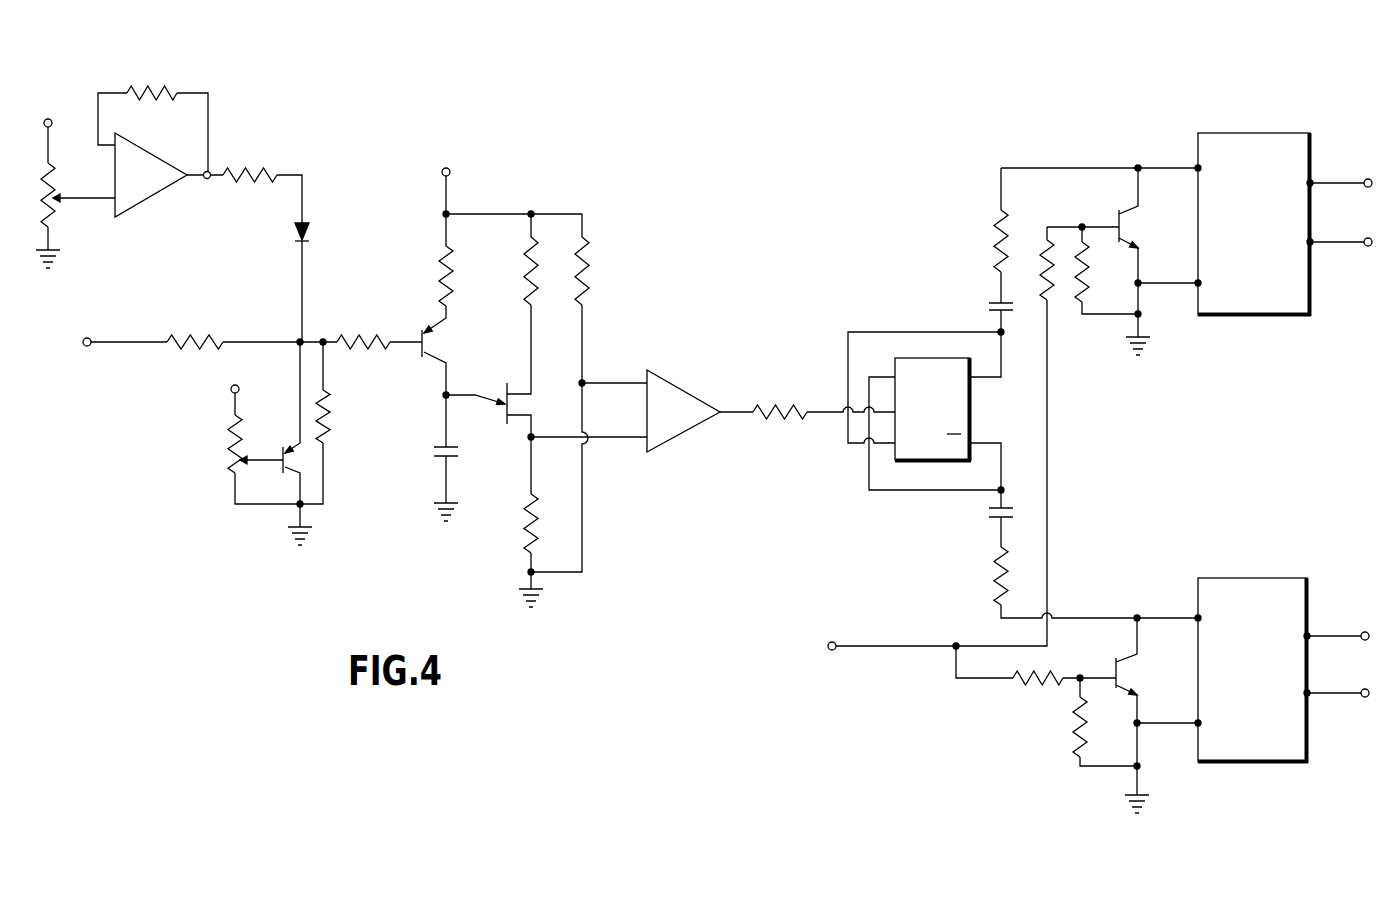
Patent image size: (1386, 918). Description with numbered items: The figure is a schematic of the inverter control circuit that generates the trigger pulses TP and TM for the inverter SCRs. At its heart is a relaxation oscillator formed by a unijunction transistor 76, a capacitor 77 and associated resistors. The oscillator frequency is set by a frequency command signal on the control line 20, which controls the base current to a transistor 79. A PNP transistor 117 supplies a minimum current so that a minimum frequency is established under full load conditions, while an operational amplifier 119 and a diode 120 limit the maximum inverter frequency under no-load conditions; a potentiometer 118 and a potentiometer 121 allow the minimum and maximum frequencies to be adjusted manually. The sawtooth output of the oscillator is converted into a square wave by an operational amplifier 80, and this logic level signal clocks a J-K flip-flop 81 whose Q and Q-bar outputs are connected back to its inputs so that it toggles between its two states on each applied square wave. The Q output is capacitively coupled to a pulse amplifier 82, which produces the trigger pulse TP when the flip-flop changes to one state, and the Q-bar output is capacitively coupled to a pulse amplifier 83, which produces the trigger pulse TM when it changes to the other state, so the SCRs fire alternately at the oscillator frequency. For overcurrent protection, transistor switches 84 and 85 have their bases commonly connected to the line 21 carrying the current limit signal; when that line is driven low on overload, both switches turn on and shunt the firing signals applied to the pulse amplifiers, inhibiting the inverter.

The control line 20 is at (85, 346).
The line 21 is at (836, 642).
The unijunction transistor 76 is at (523, 387).
The capacitor 77 is at (458, 450).
The transistor 79 is at (432, 362).
The operational amplifier 80 is at (688, 392).
The J-K flip-flop 81 is at (941, 358).
The pulse amplifier 82 is at (1281, 133).
The pulse amplifier 83 is at (1220, 578).
The transistor switch 84 is at (1127, 229).
The transistor switch 85 is at (1125, 672).
The PNP transistor 117 is at (290, 440).
The potentiometer 118 is at (227, 437).
The operational amplifier 119 is at (155, 194).
The diode 120 is at (310, 232).
The potentiometer 121 is at (48, 172).